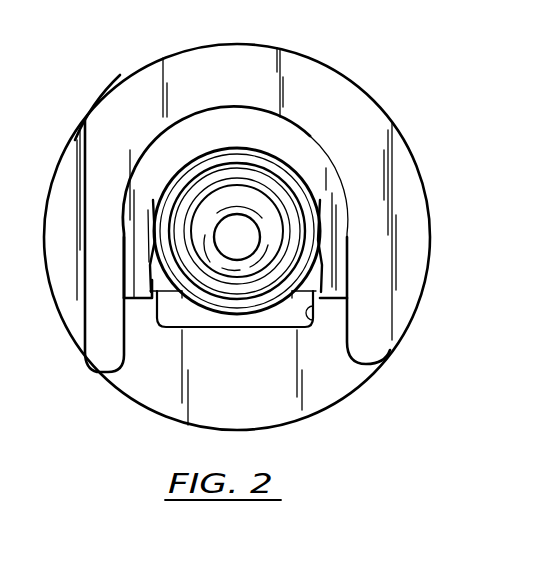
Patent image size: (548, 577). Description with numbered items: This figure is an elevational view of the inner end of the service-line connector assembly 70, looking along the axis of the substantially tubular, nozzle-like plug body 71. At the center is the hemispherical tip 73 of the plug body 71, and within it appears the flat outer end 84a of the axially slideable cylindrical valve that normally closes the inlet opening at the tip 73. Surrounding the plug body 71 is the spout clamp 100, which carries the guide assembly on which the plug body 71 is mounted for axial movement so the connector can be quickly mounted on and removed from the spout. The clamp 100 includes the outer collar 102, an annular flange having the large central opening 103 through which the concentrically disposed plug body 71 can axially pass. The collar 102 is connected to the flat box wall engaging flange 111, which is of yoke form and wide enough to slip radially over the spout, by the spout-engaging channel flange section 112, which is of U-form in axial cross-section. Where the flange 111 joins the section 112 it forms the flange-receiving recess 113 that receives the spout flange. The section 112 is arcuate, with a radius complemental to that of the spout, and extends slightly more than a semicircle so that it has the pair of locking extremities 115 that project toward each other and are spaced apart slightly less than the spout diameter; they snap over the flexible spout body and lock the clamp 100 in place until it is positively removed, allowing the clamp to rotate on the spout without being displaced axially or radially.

The service-line connector assembly 70 is at (410, 126).
The spout clamp 100 is at (113, 118).
The outer collar 102 is at (145, 384).
The box wall engaging flange 111 is at (410, 257).
The flange-receiving recess 113 is at (201, 138).
The spout-engaging channel flange section 112 is at (338, 216).
The central opening 103 is at (307, 313).
The locking extremities 115 is at (165, 278).
The plug body 71 is at (272, 168).
The tip 73 is at (238, 195).
The flat outer end 84a is at (237, 237).